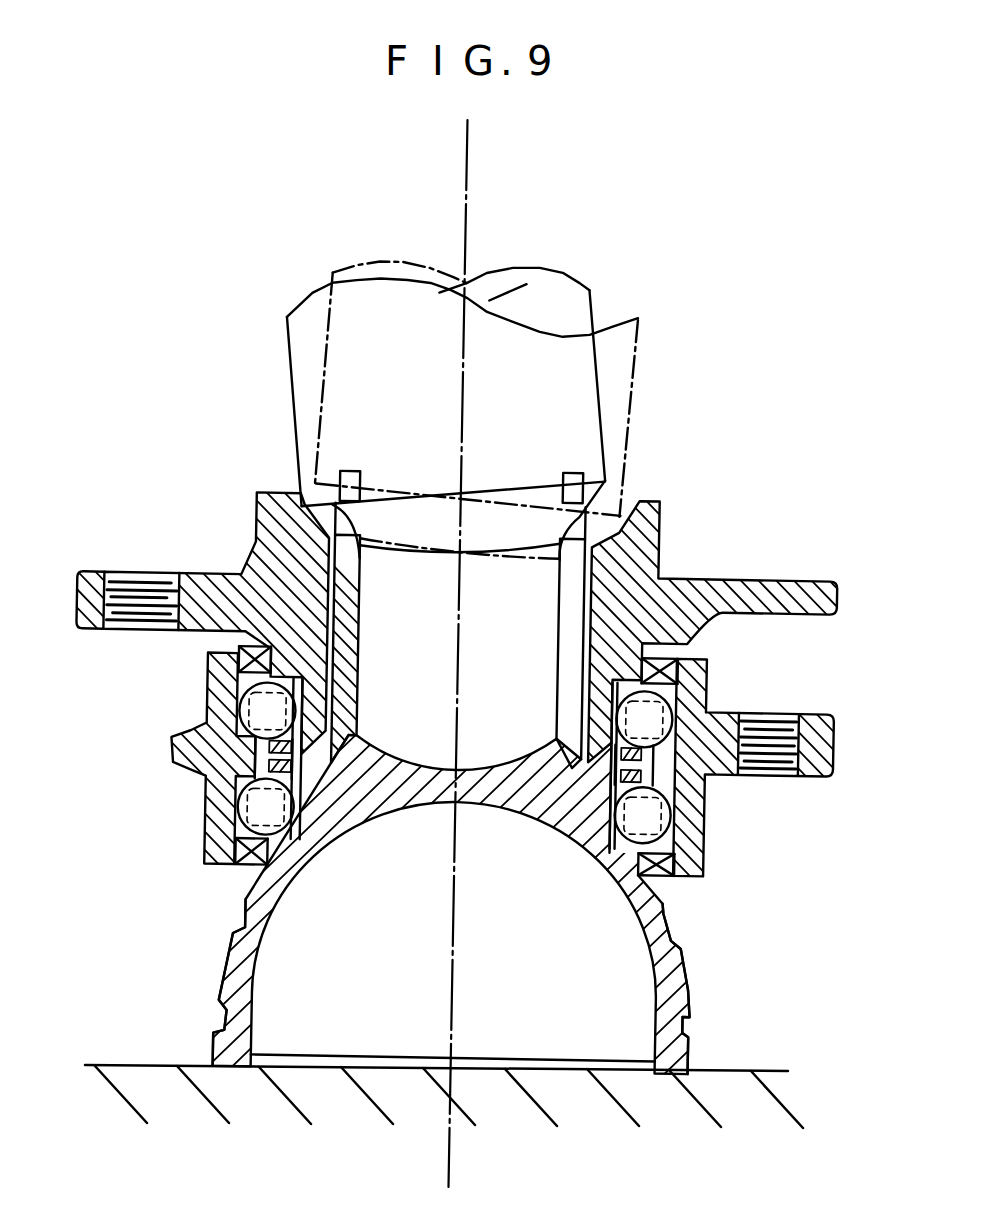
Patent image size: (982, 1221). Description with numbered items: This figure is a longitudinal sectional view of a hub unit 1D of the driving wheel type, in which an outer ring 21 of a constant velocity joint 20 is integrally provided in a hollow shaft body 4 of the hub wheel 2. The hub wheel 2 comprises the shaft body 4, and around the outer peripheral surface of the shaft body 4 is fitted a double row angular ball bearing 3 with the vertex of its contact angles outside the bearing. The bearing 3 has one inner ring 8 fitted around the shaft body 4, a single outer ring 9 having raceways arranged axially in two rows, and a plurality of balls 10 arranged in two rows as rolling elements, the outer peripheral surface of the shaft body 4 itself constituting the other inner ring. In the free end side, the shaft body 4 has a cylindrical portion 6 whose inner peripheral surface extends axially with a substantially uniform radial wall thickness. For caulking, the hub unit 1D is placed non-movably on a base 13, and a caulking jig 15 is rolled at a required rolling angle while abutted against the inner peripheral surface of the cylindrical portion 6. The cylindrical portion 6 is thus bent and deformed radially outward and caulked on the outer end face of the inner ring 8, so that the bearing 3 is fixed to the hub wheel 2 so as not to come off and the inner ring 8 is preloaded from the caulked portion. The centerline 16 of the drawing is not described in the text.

The hub unit 1D is at (774, 423).
The hub wheel 2 is at (251, 547).
The double row angular ball bearing 3 is at (720, 815).
The shaft body 4 is at (351, 700).
The cylindrical portion 6 is at (590, 527).
The inner ring 8 is at (642, 577).
The outer ring 9 is at (198, 728).
The balls 10 is at (672, 787).
The base 13 is at (772, 1068).
The caulking jig 15 is at (585, 290).
The central axis 16 is at (458, 212).
The constant velocity joint 20 is at (491, 802).
The outer ring of constant velocity joint 21 is at (674, 957).